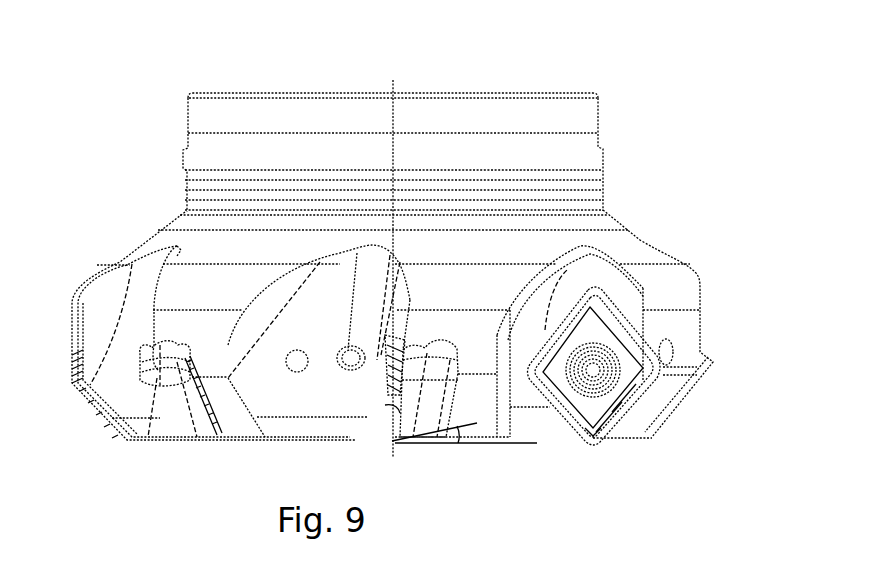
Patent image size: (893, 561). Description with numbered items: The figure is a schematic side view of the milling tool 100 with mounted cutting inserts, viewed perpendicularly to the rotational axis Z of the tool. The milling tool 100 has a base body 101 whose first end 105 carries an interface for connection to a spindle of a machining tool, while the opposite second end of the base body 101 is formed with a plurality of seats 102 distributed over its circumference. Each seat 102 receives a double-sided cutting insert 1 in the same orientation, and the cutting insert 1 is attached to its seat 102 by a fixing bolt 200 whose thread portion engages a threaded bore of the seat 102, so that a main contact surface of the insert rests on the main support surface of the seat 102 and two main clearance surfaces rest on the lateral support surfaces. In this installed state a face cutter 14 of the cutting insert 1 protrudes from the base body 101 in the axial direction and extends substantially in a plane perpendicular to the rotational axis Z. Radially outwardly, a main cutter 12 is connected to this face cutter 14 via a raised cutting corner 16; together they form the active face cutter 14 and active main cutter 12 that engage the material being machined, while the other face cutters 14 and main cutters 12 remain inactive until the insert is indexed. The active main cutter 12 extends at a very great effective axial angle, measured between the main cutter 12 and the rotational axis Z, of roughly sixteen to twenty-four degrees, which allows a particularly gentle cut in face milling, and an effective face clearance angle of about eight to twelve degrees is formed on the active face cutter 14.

The milling tool 100 is at (113, 137).
The first end 105 is at (467, 93).
The base body 101 is at (615, 240).
The seat 102 is at (157, 403).
The double-sided cutting insert 1 is at (190, 410).
The main cutter 12 is at (403, 395).
The face cutter 14 is at (593, 437).
The raised cutting corner 16 is at (600, 438).
The fixing bolt 200 is at (607, 372).
The rotational axis Z is at (393, 116).